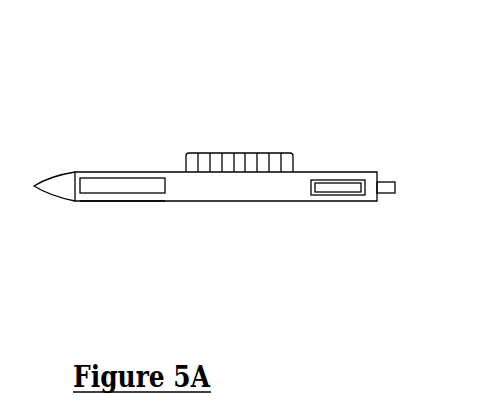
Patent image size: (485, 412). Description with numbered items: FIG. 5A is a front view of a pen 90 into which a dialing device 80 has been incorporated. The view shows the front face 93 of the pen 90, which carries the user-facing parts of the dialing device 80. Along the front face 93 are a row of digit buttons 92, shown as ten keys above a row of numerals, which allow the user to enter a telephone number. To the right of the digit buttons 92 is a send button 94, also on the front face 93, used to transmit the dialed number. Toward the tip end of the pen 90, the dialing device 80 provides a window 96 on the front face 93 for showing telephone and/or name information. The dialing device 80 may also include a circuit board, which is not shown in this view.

The dialing device 80 is at (226, 72).
The pen 90 is at (264, 254).
The digit buttons 92 is at (240, 153).
The front face 93 is at (140, 200).
The send button 94 is at (352, 190).
The window 96 is at (112, 183).